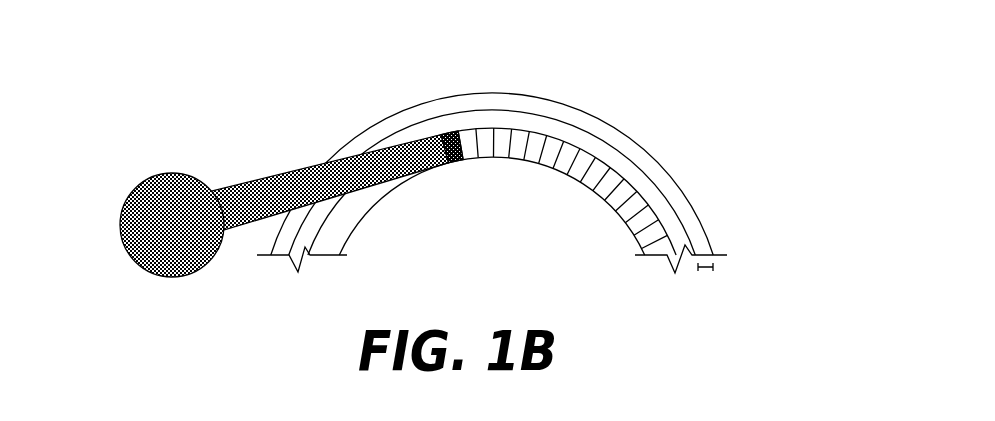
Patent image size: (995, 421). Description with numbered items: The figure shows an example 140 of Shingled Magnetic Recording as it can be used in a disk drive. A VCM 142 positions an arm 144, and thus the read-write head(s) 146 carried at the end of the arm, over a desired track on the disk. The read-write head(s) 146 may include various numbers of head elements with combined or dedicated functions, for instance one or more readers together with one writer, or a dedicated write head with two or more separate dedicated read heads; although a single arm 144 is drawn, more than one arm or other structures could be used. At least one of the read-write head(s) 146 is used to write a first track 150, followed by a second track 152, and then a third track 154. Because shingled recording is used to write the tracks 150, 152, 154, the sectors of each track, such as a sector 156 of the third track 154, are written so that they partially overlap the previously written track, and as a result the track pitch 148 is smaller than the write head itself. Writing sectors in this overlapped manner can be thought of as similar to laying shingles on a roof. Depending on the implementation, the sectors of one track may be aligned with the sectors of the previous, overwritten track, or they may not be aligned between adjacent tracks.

The example of SMR 140 is at (138, 102).
The VCM 142 is at (170, 278).
The arm 144 is at (292, 171).
The read-write head(s) 146 is at (453, 163).
The track pitch 148 is at (708, 272).
The first track 150 is at (462, 103).
The second track 152 is at (613, 162).
The third track 154 is at (350, 208).
The sector 156 is at (612, 204).